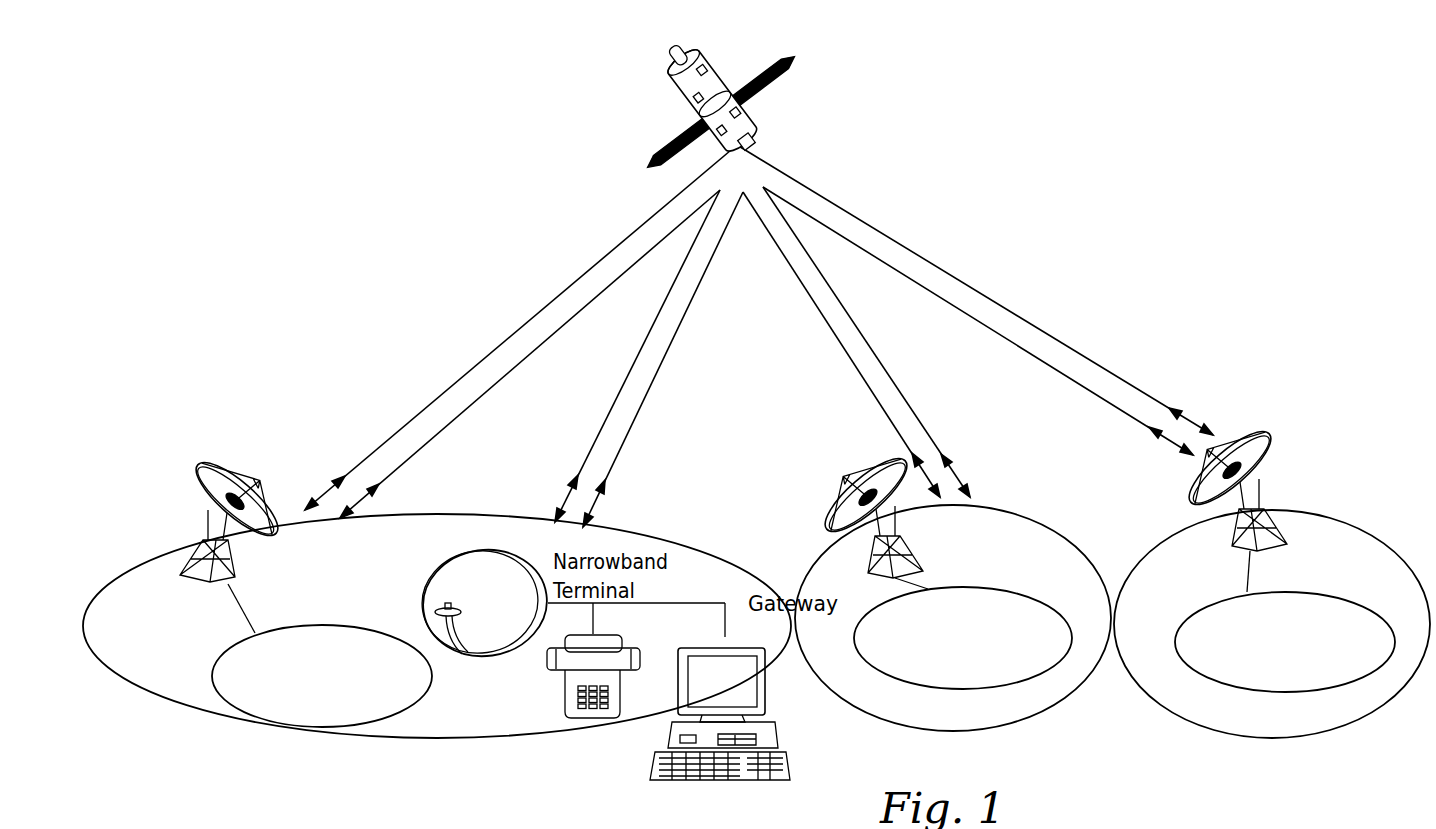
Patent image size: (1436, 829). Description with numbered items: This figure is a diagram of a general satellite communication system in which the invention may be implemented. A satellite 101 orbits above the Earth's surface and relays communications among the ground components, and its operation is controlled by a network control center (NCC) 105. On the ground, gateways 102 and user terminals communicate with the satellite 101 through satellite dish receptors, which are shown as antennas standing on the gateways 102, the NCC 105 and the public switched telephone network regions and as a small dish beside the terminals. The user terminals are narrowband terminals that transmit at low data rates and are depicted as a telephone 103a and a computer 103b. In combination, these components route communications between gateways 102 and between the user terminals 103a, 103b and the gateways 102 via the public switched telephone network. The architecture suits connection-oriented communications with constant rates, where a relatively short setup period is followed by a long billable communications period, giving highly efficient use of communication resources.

The satellite 101 is at (768, 89).
The gateway 102 is at (148, 600).
The telephone 103a is at (583, 719).
The computer 103b is at (733, 780).
The network control center (NCC) 105 is at (1026, 683).